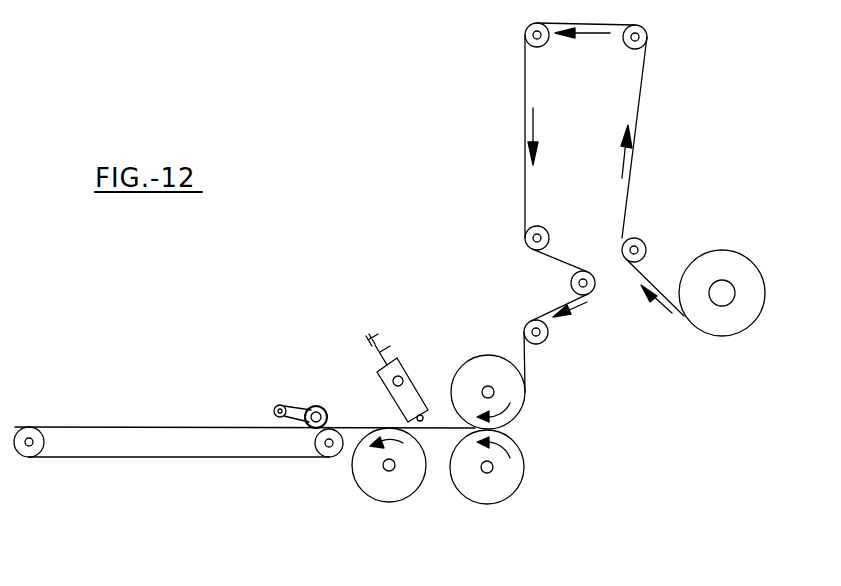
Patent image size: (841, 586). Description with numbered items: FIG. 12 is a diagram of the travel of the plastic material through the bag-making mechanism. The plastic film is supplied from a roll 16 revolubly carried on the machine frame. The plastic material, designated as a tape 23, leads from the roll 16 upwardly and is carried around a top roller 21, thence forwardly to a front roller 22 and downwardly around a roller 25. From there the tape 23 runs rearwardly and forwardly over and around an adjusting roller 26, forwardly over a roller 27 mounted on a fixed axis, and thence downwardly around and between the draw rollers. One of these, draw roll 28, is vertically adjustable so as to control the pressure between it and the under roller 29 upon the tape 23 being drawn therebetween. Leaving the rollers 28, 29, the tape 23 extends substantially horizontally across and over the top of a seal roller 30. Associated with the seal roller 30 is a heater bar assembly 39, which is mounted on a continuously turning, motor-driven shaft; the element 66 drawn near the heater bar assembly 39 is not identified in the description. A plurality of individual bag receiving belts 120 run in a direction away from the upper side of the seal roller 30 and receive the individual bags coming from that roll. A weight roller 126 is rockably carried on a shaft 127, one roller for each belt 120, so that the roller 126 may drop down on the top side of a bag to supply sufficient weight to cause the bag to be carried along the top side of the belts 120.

The roll 16 is at (717, 327).
The top roller 21 is at (649, 38).
The front roller 22 is at (525, 41).
The tape 23 is at (525, 192).
The roller 25 is at (525, 240).
The adjusting roller 26 is at (571, 282).
The roller 27 is at (548, 332).
The draw roll 28 is at (512, 388).
The under roller 29 is at (512, 468).
The seal roller 30 is at (396, 490).
The heater bar assembly 39 is at (412, 388).
The pivot 66 is at (421, 422).
The bag receiving belts 120 is at (208, 427).
The weight roller 126 is at (314, 405).
The shaft 127 is at (278, 404).